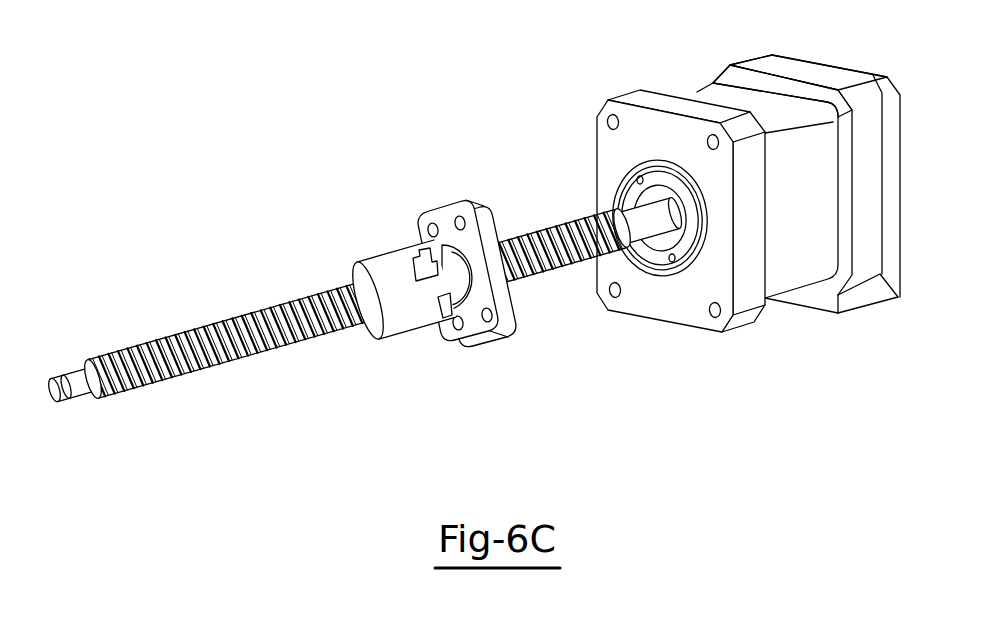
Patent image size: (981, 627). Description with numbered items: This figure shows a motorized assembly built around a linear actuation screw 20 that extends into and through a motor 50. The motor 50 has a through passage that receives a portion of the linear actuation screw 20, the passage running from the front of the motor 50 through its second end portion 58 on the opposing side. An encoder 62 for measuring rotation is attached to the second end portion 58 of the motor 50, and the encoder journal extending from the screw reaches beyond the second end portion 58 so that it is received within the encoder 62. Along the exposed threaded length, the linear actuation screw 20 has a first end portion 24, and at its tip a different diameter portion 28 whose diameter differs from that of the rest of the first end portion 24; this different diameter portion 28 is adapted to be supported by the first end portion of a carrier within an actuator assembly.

The linear actuation screw 20 is at (546, 225).
The first end portion 24 is at (168, 340).
The different diameter portion 28 is at (72, 373).
The motor 50 is at (700, 97).
The second end portion 58 is at (748, 75).
The encoder 62 is at (887, 293).